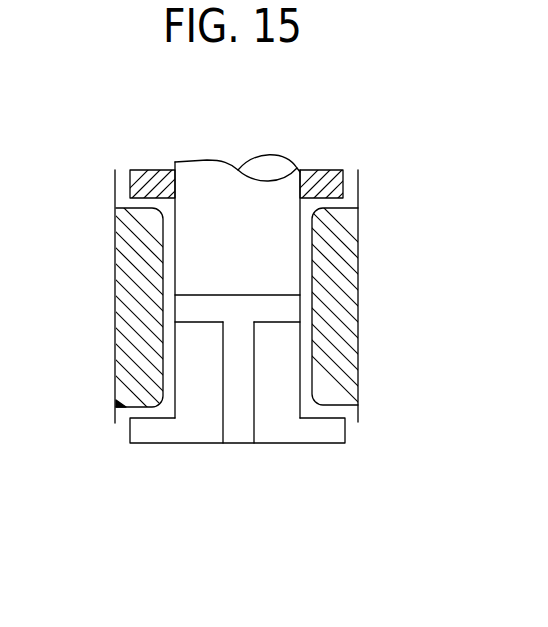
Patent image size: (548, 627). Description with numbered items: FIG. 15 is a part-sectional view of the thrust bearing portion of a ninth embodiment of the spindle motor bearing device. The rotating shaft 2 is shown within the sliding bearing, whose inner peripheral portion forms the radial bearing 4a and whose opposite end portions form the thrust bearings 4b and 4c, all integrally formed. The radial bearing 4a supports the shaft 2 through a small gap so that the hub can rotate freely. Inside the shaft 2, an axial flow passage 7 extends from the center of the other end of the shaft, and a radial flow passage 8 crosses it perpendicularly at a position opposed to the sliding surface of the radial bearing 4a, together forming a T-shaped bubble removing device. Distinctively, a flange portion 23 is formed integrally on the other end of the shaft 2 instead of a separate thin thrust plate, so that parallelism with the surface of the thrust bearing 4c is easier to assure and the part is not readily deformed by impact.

The shaft 2 is at (215, 180).
The radial bearing 4a is at (140, 268).
The thrust bearing 4b is at (130, 202).
The thrust bearing 4c is at (123, 407).
The axial flow passage 7 is at (238, 435).
The radial flow passage 8 is at (292, 303).
The flange portion 23 is at (293, 435).